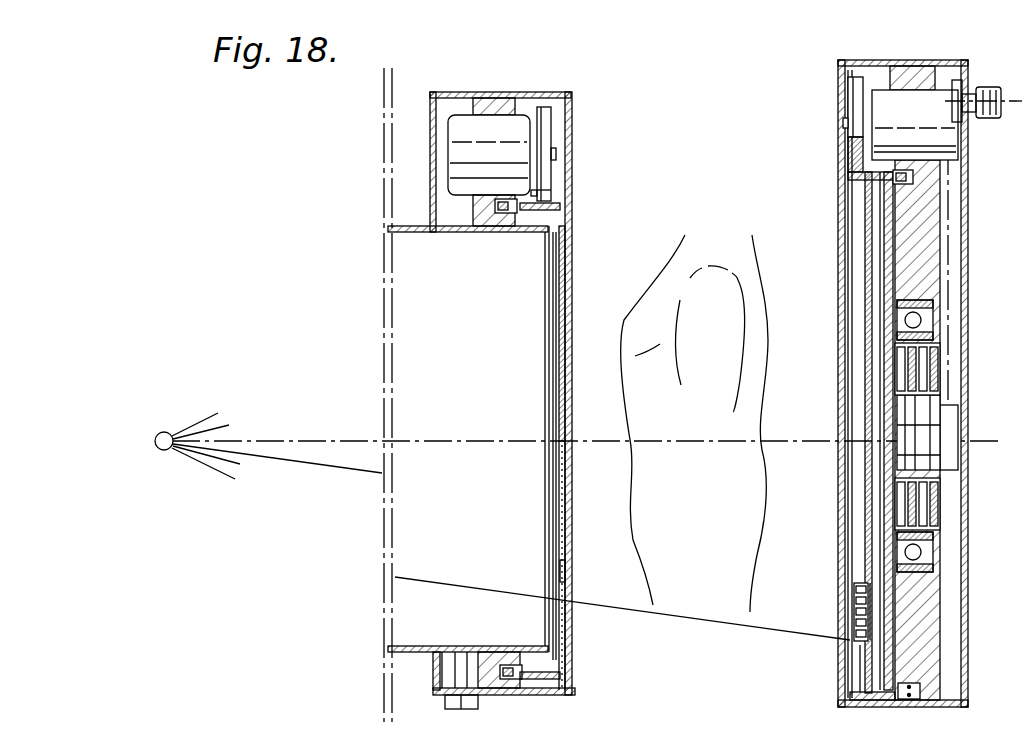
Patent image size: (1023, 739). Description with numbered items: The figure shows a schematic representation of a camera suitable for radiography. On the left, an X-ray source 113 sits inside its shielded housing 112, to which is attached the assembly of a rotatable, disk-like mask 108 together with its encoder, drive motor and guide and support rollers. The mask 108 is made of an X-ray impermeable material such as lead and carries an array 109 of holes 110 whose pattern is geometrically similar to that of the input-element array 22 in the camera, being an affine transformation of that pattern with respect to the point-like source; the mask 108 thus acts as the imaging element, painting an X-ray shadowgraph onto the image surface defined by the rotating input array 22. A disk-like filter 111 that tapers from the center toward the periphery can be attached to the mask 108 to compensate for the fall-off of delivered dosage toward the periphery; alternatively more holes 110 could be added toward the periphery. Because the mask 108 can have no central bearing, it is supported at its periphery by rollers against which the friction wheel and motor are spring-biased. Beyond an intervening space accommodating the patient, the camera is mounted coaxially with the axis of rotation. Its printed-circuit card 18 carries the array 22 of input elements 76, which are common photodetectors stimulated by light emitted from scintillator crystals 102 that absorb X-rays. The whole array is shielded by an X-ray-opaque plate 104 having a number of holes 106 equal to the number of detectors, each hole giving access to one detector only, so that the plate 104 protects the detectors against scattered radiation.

The printed-circuit card 18 is at (906, 690).
The array of input elements 22 is at (838, 607).
The input elements 76 is at (869, 588).
The scintillator crystals 102 is at (862, 652).
The X-ray-opaque plate 104 is at (854, 514).
The holes 106 is at (858, 593).
The disk-like mask 108 is at (562, 532).
The array of holes 109 is at (582, 574).
The holes 110 is at (560, 575).
The disk-like filter 111 is at (561, 410).
The shielded housing 112 is at (404, 234).
The X-ray source 113 is at (163, 433).